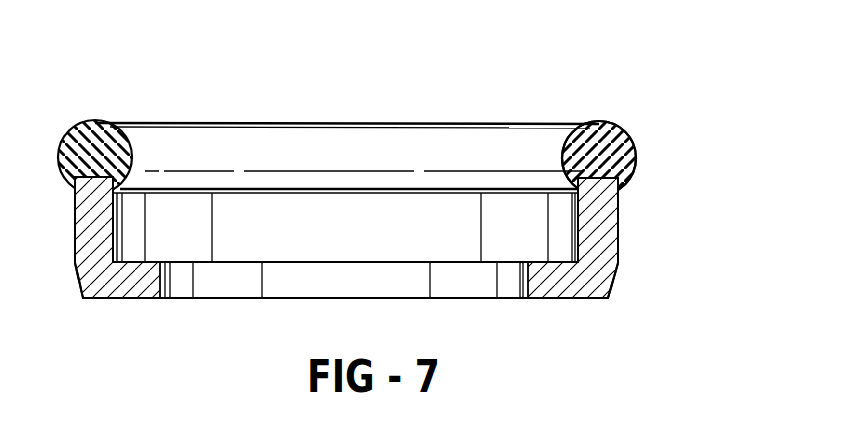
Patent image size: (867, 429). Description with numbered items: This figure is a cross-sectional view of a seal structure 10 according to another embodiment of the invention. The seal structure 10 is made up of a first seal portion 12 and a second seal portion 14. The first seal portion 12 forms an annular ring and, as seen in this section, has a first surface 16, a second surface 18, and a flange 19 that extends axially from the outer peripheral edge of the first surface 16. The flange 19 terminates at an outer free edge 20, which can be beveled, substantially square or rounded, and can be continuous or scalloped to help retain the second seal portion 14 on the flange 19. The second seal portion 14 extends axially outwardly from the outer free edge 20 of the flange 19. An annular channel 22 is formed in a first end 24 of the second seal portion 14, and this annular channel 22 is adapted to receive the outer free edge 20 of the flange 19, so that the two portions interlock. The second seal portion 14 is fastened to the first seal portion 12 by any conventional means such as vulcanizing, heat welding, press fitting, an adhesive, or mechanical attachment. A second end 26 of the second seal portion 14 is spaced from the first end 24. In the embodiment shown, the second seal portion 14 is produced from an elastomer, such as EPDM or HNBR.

The seal structure 10 is at (708, 100).
The first seal portion 12 is at (567, 306).
The second seal portion 14 is at (358, 119).
The first surface 16 is at (537, 261).
The second surface 18 is at (393, 300).
The flange 19 is at (610, 242).
The outer free edge 20 is at (622, 137).
The annular channel 22 is at (620, 218).
The first end 24 is at (628, 193).
The second end 26 is at (620, 222).